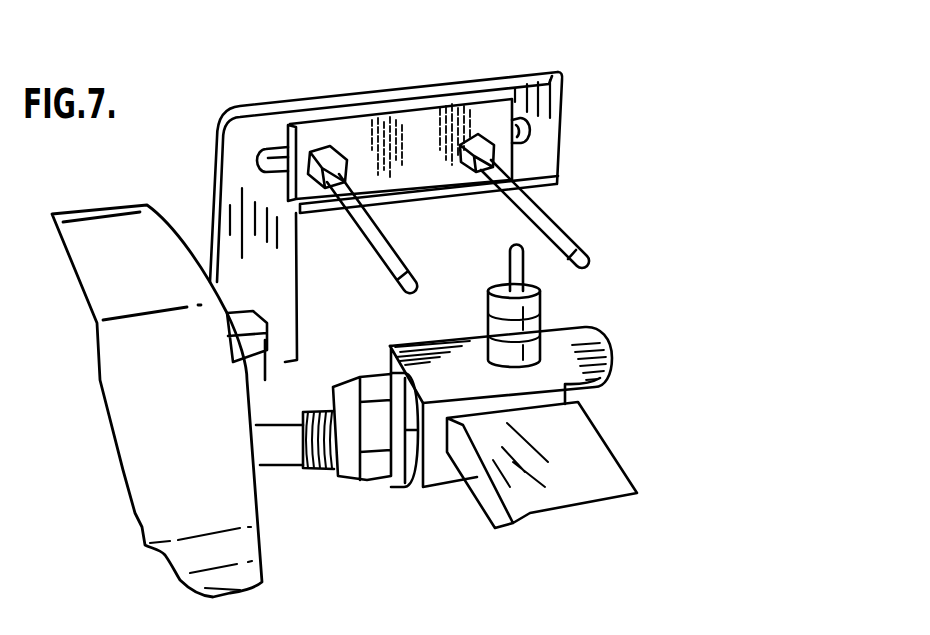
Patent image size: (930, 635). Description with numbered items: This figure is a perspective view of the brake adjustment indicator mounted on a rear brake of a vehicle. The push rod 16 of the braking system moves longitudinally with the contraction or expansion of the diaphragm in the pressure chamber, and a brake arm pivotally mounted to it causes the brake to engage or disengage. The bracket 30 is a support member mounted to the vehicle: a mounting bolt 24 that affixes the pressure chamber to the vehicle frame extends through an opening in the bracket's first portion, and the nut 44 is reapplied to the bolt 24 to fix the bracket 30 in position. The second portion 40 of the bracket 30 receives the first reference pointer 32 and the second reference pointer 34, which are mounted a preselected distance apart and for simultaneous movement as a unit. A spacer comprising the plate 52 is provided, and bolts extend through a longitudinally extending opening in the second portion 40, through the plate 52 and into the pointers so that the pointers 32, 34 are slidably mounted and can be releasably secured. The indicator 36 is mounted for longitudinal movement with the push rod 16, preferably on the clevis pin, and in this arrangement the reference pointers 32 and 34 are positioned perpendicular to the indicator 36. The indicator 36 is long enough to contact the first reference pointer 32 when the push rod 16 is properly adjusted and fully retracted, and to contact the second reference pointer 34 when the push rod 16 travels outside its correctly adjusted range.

The push rod 16 is at (280, 470).
The mounting bolt 24 is at (263, 366).
The bracket 30 is at (279, 268).
The first reference pointer 32 is at (398, 282).
The second reference pointer 34 is at (572, 222).
The indicator 36 is at (543, 310).
The second portion 40 is at (416, 82).
The nut 44 is at (268, 350).
The plate 52 is at (433, 120).